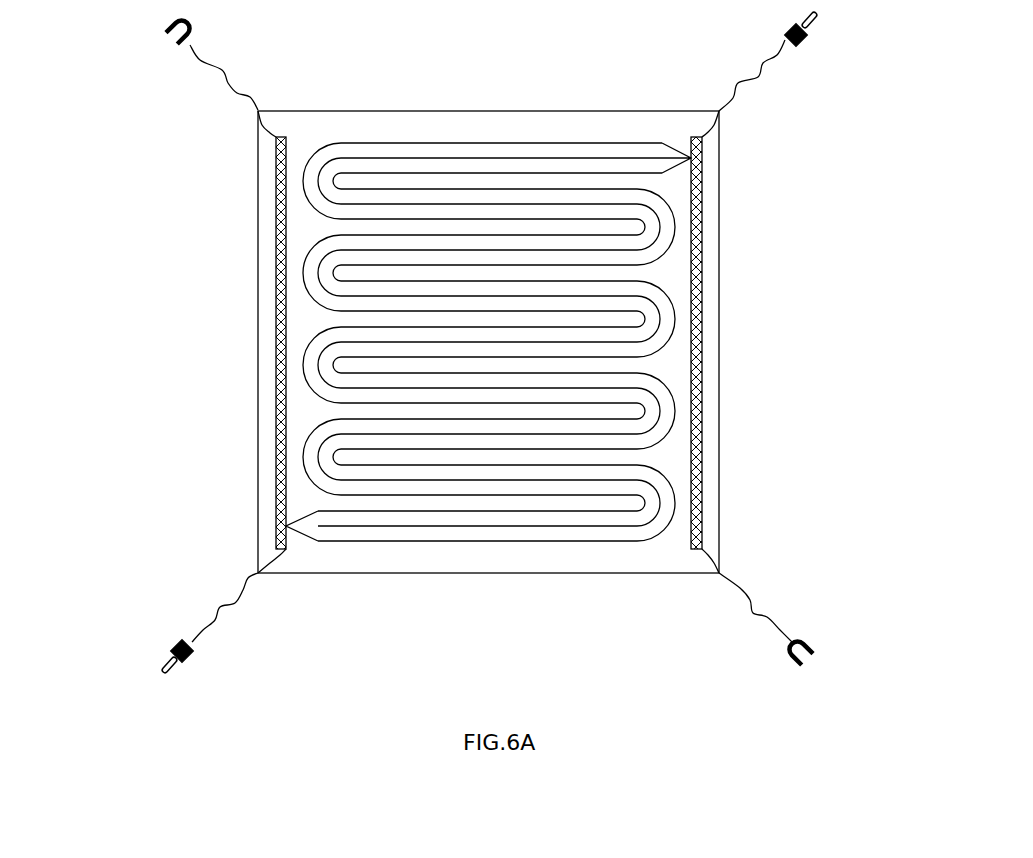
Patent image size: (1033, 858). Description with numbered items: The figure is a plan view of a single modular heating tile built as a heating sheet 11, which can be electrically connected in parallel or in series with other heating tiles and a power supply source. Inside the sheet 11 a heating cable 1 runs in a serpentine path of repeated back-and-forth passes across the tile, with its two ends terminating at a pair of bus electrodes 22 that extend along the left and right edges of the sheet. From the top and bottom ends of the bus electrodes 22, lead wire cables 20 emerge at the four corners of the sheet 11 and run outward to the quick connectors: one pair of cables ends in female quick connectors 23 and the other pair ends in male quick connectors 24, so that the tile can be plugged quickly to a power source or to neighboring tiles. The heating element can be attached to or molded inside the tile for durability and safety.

The heating cable 1 is at (305, 370).
The heating sheet 11 is at (528, 562).
The lead wire cable 20 is at (758, 77).
The bus electrode 22 is at (702, 320).
The female quick connector 23 is at (171, 45).
The male quick connector 24 is at (805, 40).